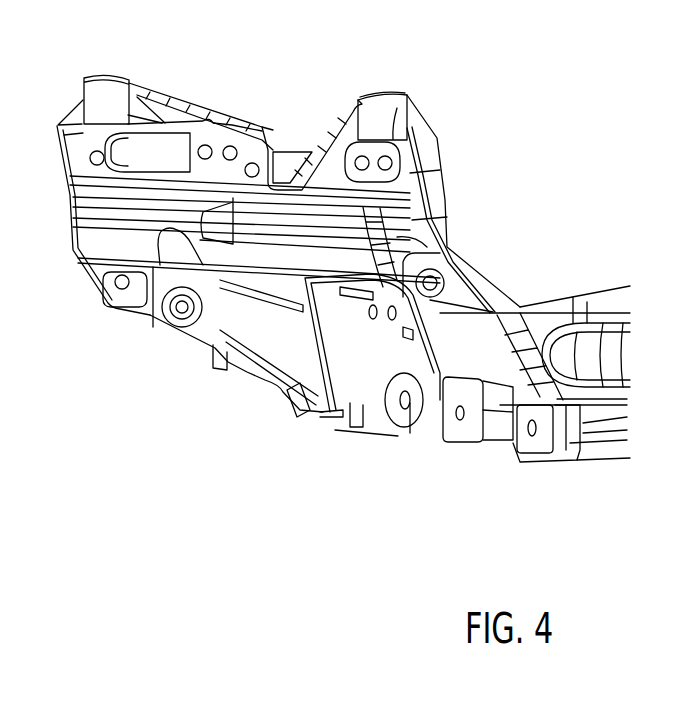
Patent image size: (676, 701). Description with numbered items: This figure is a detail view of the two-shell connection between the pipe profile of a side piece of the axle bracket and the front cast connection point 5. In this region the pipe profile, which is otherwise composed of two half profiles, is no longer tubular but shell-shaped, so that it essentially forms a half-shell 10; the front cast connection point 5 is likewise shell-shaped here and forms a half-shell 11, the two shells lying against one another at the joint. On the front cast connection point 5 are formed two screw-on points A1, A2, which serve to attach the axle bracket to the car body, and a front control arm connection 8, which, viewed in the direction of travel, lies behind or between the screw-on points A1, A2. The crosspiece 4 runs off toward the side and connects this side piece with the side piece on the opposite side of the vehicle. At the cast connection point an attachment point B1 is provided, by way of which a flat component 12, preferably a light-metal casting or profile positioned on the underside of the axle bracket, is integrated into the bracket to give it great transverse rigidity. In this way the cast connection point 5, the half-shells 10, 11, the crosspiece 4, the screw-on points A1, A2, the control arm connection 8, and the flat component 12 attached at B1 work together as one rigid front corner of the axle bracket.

The screw-on point A1 is at (118, 74).
The screw-on point A2 is at (440, 87).
The front cast connection point 5 is at (247, 123).
The crosspiece 4 is at (592, 298).
The half-shell 10 is at (150, 242).
The half-shell 11 is at (153, 327).
The front control arm connection 8 is at (490, 456).
The attachment point B1 is at (560, 448).
The flat component 12 is at (613, 448).